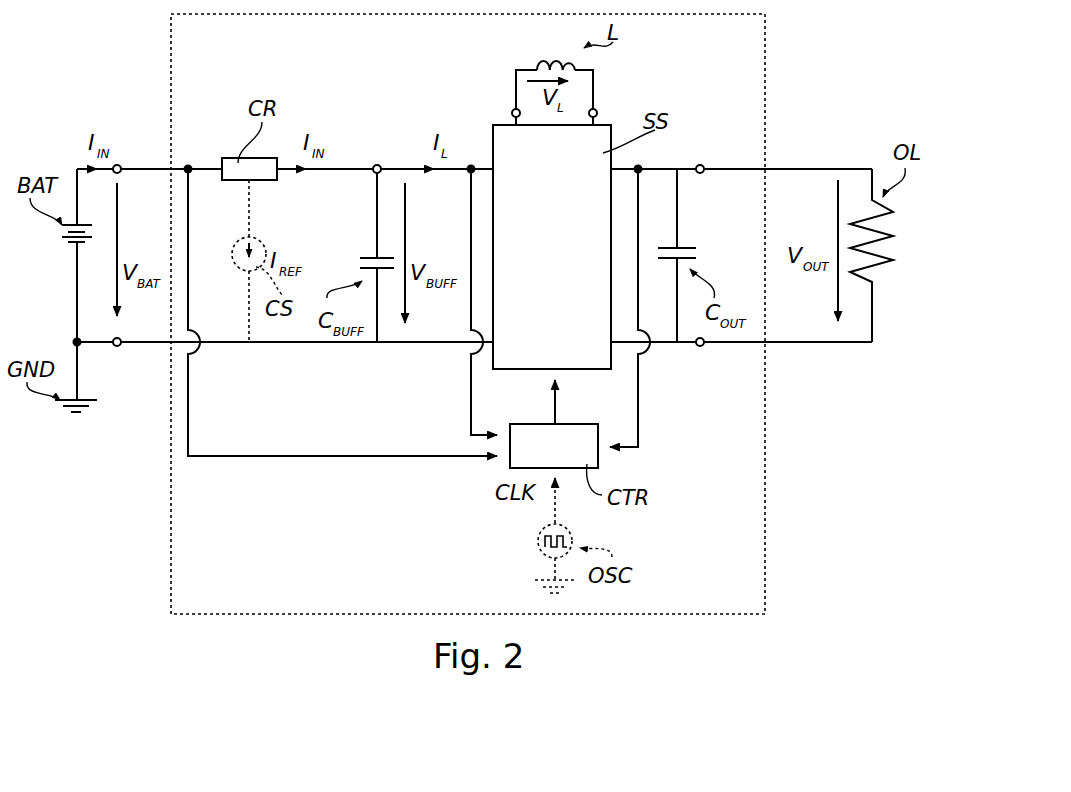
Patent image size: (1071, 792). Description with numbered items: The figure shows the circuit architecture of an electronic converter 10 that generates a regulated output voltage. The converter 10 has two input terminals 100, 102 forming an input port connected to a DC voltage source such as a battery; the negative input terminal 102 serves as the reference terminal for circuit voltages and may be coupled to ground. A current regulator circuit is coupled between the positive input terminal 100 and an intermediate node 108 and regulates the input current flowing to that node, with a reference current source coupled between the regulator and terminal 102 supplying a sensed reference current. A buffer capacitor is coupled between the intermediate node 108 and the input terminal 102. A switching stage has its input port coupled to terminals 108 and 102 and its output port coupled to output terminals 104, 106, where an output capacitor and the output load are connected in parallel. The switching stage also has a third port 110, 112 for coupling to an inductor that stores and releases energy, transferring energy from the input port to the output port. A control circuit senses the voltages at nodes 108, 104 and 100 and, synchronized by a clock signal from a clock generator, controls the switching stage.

The electronic converter 10 is at (757, 54).
The positive input terminal 100 is at (118, 165).
The negative input terminal 102 is at (118, 346).
The positive output terminal 104 is at (702, 173).
The negative output terminal 106 is at (702, 346).
The intermediate node 108 is at (375, 173).
The third port terminal 110 is at (512, 110).
The third port terminal 112 is at (597, 110).